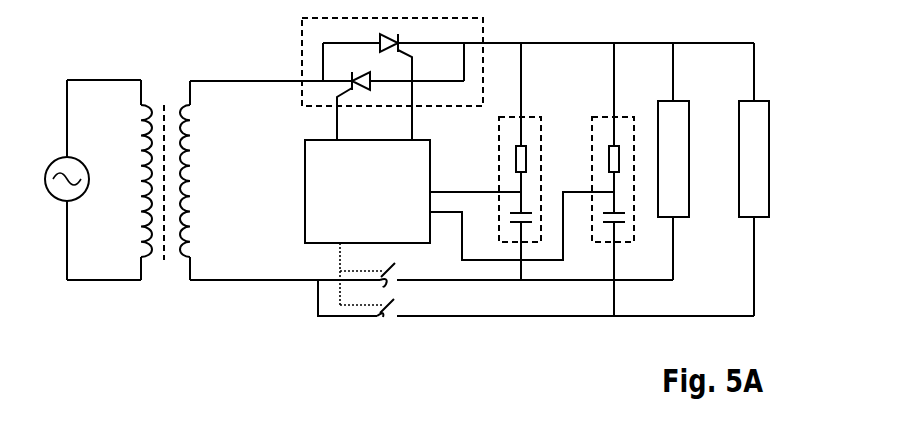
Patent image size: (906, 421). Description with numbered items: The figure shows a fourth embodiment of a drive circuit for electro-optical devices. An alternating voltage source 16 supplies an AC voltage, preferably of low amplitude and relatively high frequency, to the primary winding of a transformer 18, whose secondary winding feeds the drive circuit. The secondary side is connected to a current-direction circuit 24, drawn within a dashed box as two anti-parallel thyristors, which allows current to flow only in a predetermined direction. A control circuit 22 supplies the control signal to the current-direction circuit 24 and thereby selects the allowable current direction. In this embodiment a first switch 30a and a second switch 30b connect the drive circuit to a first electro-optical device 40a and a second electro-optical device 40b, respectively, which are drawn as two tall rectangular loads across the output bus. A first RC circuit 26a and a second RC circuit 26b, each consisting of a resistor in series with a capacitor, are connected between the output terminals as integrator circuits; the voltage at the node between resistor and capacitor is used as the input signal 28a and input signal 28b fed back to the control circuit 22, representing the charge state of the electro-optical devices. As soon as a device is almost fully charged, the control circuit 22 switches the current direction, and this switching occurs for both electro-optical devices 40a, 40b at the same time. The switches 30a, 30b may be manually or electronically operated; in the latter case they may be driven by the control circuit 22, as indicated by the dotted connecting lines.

The alternating voltage source 16 is at (62, 200).
The transformer 18 is at (159, 278).
The control circuit 22 is at (367, 146).
The current-direction circuit 24 is at (485, 33).
The first RC circuit 26a is at (540, 242).
The second RC circuit 26b is at (620, 242).
The input signal 28a is at (477, 192).
The input signal 28b is at (447, 213).
The first switch 30a is at (384, 286).
The second switch 30b is at (381, 318).
The first electro-optical device 40a is at (670, 145).
The second electro-optical device 40b is at (753, 162).